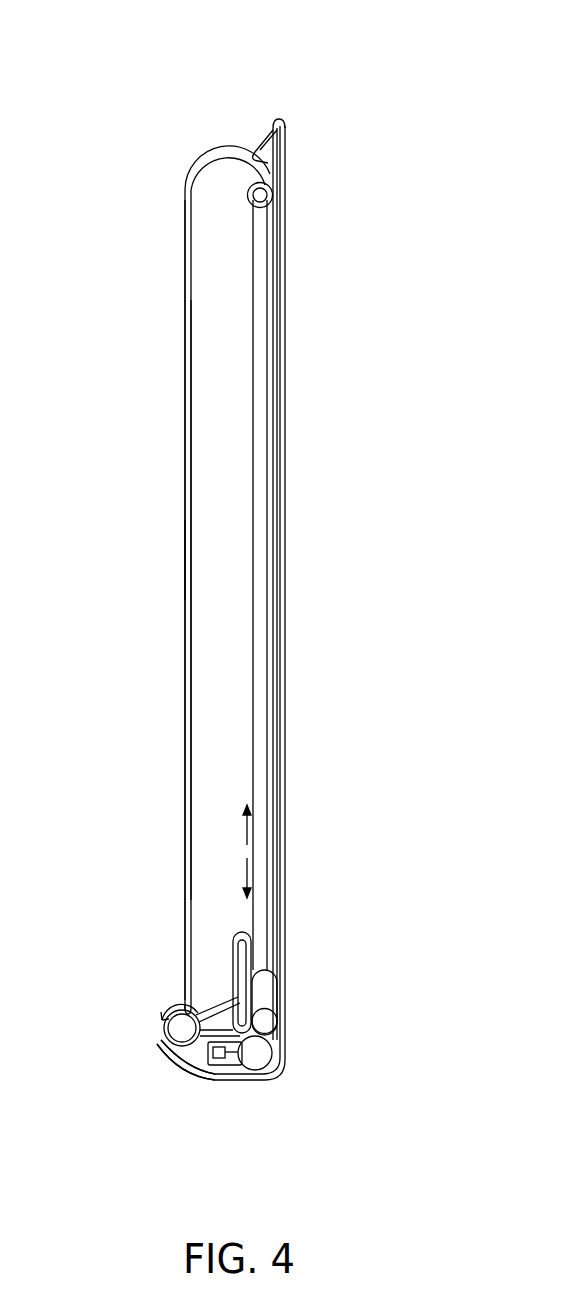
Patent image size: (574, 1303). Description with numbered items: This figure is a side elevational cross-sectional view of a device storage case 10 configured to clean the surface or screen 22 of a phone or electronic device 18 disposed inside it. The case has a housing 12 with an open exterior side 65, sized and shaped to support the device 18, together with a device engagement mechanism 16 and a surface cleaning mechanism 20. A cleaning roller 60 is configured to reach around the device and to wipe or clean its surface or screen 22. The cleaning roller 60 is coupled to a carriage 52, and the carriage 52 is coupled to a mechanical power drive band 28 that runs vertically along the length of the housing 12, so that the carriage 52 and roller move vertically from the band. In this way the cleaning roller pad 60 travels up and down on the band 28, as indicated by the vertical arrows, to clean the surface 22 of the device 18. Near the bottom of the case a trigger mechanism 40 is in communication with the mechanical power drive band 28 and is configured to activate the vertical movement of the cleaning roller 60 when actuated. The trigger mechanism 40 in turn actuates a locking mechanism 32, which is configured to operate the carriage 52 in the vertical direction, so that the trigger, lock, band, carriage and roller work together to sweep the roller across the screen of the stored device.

The device storage case 10 is at (377, 81).
The housing 12 is at (286, 735).
The device engagement mechanism 16 is at (195, 1056).
The device 18 is at (231, 588).
The surface cleaning mechanism 20 is at (163, 992).
The surface or screen 22 is at (185, 279).
The mechanical power drive band 28 is at (260, 335).
The locking mechanism 32 is at (230, 1065).
The trigger mechanism 40 is at (260, 1053).
The carriage 52 is at (253, 1003).
The cleaning roller 60 is at (158, 1027).
The open exterior side 65 is at (105, 560).